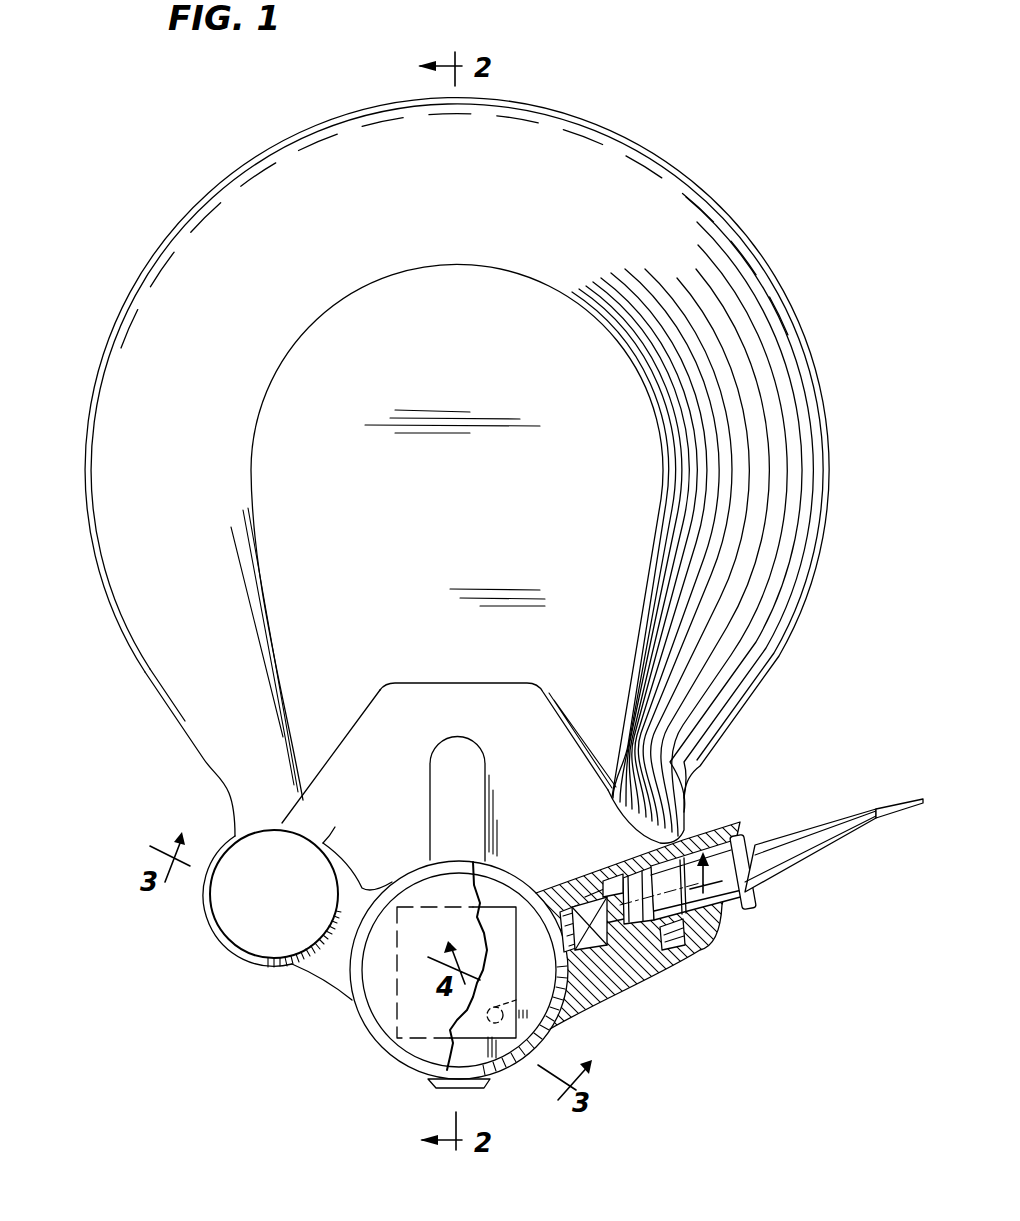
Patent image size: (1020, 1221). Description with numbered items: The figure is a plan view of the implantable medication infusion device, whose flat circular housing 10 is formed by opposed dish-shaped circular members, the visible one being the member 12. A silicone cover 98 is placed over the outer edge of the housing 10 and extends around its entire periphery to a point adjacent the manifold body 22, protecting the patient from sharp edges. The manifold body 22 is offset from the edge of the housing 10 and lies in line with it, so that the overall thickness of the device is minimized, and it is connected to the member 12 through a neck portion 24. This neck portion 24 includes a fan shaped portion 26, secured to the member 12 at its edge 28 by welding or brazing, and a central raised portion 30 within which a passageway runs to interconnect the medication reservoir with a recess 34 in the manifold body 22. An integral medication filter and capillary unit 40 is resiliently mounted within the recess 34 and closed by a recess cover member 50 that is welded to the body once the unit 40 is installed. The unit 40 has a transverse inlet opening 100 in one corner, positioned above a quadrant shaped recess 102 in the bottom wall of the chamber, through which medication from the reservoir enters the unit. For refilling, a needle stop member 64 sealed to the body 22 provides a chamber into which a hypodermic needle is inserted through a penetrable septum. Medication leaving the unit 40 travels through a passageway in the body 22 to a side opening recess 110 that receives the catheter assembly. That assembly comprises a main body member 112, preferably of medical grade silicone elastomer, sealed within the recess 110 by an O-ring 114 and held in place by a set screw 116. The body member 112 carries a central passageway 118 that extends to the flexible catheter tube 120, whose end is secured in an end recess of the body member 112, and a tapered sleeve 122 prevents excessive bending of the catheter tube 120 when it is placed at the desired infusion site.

The housing 10 is at (272, 486).
The dish-shaped circular member 12 is at (282, 574).
The manifold body 22 is at (330, 978).
The neck portion 24 is at (358, 772).
The fan shaped portion 26 is at (488, 696).
The edge 28 is at (556, 712).
The central raised portion 30 is at (477, 782).
The recess 34 is at (522, 917).
The integral medication filter and capillary unit 40 is at (492, 896).
The recess cover member 50 is at (428, 1050).
The needle stop member 64 is at (237, 915).
The silicone cover 98 is at (733, 317).
The transverse inlet opening 100 is at (516, 984).
The quadrant shaped recess 102 is at (555, 1023).
The side opening recess 110 is at (605, 880).
The main body member 112 is at (633, 937).
The O-ring 114 is at (583, 906).
The set screw 116 is at (680, 947).
The central passageway 118 is at (610, 943).
The flexible catheter tube 120 is at (878, 810).
The tapered sleeve 122 is at (826, 838).